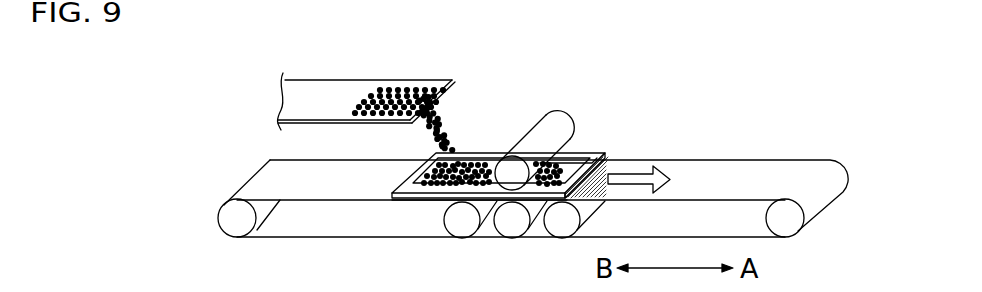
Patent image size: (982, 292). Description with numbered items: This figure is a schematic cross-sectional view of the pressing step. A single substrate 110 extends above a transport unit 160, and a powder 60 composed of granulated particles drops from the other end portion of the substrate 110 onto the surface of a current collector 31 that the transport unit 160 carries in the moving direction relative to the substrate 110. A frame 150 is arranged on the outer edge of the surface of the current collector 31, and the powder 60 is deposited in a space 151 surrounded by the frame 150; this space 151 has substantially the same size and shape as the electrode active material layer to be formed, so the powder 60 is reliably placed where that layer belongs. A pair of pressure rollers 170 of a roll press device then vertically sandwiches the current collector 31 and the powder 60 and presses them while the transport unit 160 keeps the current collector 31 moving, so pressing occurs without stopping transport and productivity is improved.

The substrate 110 is at (313, 88).
The powder 60 is at (397, 87).
The transport unit 160 is at (262, 160).
The pressure rollers 170 is at (558, 117).
The space 151 is at (570, 162).
The frame 150 is at (600, 152).
The current collector 31 is at (413, 203).